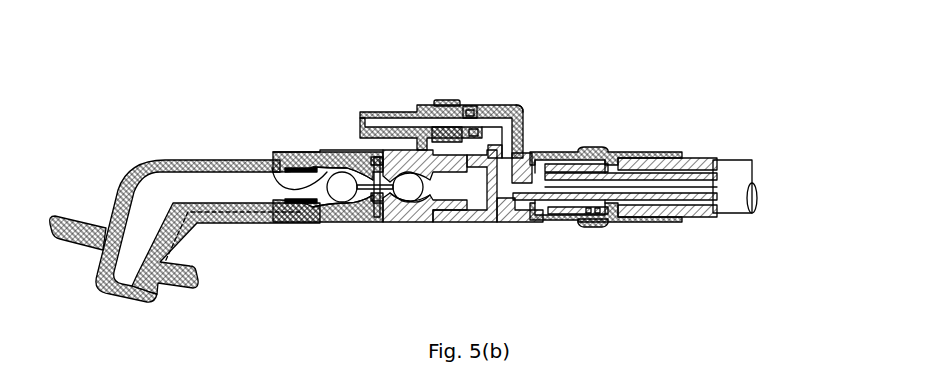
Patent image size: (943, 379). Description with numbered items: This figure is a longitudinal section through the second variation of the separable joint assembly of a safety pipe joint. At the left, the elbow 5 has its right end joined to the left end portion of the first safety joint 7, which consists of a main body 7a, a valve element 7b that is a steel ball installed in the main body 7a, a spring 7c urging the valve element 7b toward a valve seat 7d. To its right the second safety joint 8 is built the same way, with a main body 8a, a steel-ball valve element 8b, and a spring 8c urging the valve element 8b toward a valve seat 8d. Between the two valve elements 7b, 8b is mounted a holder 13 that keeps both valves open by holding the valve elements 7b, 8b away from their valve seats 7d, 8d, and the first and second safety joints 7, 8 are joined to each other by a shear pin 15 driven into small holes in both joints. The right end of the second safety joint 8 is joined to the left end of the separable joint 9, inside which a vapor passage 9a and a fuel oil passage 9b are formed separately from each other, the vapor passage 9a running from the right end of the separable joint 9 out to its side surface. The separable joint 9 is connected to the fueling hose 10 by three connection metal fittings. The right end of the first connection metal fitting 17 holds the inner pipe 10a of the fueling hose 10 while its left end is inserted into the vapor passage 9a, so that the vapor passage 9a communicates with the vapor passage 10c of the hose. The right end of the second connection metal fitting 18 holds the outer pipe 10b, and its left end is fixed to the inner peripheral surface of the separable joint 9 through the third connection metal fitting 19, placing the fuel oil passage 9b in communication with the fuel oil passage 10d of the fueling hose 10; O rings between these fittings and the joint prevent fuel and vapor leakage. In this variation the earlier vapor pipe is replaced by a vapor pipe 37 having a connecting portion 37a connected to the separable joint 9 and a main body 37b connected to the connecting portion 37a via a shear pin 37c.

The elbow 5 is at (190, 158).
The first safety joint 7 is at (345, 150).
The main body 7a is at (330, 150).
The valve element 7b is at (342, 190).
The spring 7c is at (272, 168).
The valve seat 7d is at (362, 178).
The second safety joint 8 is at (400, 150).
The main body 8a is at (407, 150).
The valve element 8b is at (408, 188).
The spring 8c is at (420, 200).
The valve seat 8d is at (390, 203).
The separable joint 9 is at (557, 153).
The vapor passage 9a is at (525, 153).
The fuel oil passage 9b is at (480, 203).
The fueling hose 10 is at (708, 157).
The inner pipe 10a is at (700, 213).
The outer pipe 10b is at (693, 157).
The vapor passage 10c is at (720, 183).
The fuel oil passage 10d is at (698, 207).
The holder 13 is at (364, 192).
The shear pin 15 is at (380, 170).
The first connection metal fitting 17 is at (540, 230).
The second connection metal fitting 18 is at (650, 220).
The third connection metal fitting 19 is at (597, 223).
The vapor pipe 37 is at (523, 110).
The connecting portion 37a is at (507, 104).
The main body 37b is at (447, 102).
The shear pin 37c is at (467, 106).